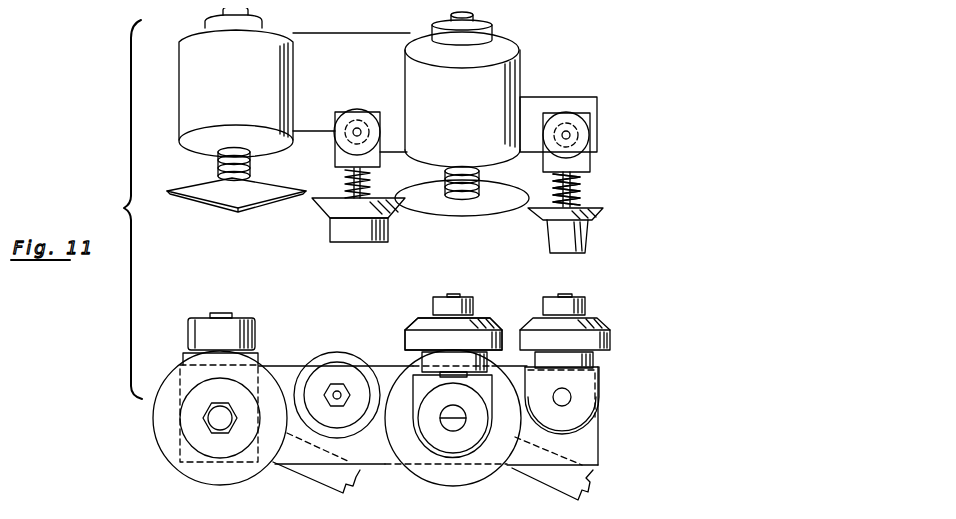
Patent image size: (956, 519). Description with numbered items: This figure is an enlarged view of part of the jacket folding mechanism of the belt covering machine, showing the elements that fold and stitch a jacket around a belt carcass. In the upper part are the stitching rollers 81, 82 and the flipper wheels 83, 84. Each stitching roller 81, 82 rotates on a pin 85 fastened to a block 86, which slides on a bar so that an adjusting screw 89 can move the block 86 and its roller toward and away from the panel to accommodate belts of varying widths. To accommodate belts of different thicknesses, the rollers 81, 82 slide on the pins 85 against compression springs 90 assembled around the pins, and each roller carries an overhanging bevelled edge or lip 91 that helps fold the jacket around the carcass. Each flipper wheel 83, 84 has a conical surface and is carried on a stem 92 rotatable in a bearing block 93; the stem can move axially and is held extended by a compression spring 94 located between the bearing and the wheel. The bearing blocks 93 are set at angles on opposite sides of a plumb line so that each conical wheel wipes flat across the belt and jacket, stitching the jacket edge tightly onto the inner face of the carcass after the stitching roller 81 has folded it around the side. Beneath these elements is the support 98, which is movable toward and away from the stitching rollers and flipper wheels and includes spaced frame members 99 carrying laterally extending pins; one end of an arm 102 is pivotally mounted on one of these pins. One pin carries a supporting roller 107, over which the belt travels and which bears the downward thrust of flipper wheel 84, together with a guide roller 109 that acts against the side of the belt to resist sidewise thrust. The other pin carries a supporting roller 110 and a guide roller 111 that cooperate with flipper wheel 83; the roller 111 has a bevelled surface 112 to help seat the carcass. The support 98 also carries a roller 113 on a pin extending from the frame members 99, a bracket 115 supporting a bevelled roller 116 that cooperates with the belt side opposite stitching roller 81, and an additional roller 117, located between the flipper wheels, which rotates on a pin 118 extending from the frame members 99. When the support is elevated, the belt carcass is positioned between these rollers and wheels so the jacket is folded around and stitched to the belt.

The stitching roller 81 is at (588, 246).
The stitching roller 82 is at (378, 243).
The flipper wheel 83 is at (443, 213).
The flipper wheel 84 is at (228, 208).
The pin 85 is at (578, 184).
The block 86 is at (589, 162).
The adjusting screw 89 is at (583, 130).
The compression spring 90 is at (350, 175).
The bevelled edge or lip 91 is at (402, 204).
The stem 92 is at (481, 174).
The bearing block 93 is at (185, 86).
The compression spring 94 is at (220, 165).
The support 98 is at (602, 443).
The frame members 99 is at (378, 463).
The arm 102 is at (553, 482).
The supporting roller 107 is at (262, 380).
The guide roller 109 is at (188, 323).
The supporting roller 110 is at (403, 377).
The guide roller 111 is at (404, 331).
The bevelled surface 112 is at (495, 323).
The roller 113 is at (602, 397).
The bracket 115 is at (598, 370).
The roller 116 is at (610, 330).
The roller 117 is at (345, 341).
The pin 118 is at (346, 404).